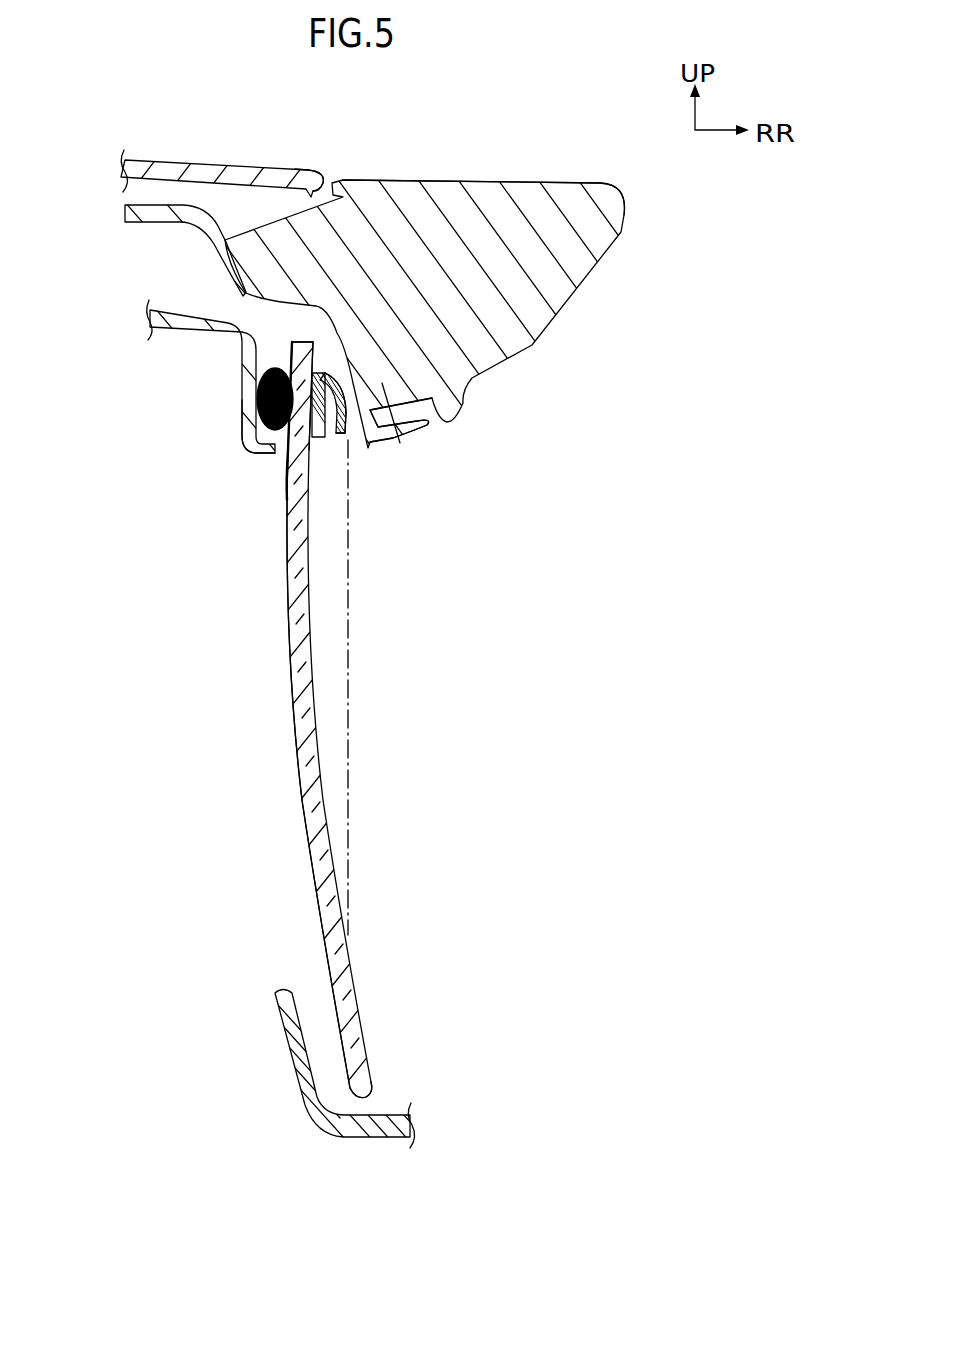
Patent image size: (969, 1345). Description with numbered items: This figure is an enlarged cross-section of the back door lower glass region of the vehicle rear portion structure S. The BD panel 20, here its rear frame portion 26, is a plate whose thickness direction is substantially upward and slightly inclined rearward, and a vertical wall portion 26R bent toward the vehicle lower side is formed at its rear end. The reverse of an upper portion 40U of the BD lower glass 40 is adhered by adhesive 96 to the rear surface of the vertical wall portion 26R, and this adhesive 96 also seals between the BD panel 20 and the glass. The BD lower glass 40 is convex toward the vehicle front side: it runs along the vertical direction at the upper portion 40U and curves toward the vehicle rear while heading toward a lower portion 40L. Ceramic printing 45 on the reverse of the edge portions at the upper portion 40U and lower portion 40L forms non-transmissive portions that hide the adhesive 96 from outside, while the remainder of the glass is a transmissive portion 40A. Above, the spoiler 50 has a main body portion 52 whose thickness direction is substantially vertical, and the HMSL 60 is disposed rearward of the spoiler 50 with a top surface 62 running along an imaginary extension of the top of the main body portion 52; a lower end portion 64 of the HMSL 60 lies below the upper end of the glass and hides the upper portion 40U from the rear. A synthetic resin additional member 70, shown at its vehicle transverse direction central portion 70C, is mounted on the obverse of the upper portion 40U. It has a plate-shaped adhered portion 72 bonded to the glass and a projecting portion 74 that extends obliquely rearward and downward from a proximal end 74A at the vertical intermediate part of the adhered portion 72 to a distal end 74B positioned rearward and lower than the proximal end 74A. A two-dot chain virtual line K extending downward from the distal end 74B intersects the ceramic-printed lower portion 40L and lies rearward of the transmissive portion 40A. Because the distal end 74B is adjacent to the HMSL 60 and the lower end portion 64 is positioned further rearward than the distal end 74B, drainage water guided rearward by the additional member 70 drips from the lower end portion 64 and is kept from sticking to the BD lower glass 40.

The BD panel 20 is at (215, 387).
The rear frame portion 26 is at (180, 338).
The vertical wall portion 26R is at (242, 420).
The BD lower glass 40 is at (340, 790).
The transmissive portion 40A is at (286, 498).
The upper portion 40U is at (309, 492).
The lower portion 40L is at (364, 1056).
The ceramic printing 45 is at (287, 462).
The spoiler 50 is at (181, 152).
The main body portion 52 is at (273, 168).
The HMSL 60 is at (593, 300).
The top surface 62 is at (472, 183).
The lower end portion 64 is at (372, 442).
The additional member 70 is at (424, 457).
The vehicle transverse direction central portion 70C is at (424, 457).
The adhered portion 72 is at (320, 370).
The projecting portion 74 is at (330, 436).
The proximal end 74A is at (328, 405).
The distal end 74B is at (380, 469).
The adhesive 96 is at (280, 368).
The virtual line K is at (352, 698).
The vehicle rear portion structure S is at (585, 700).